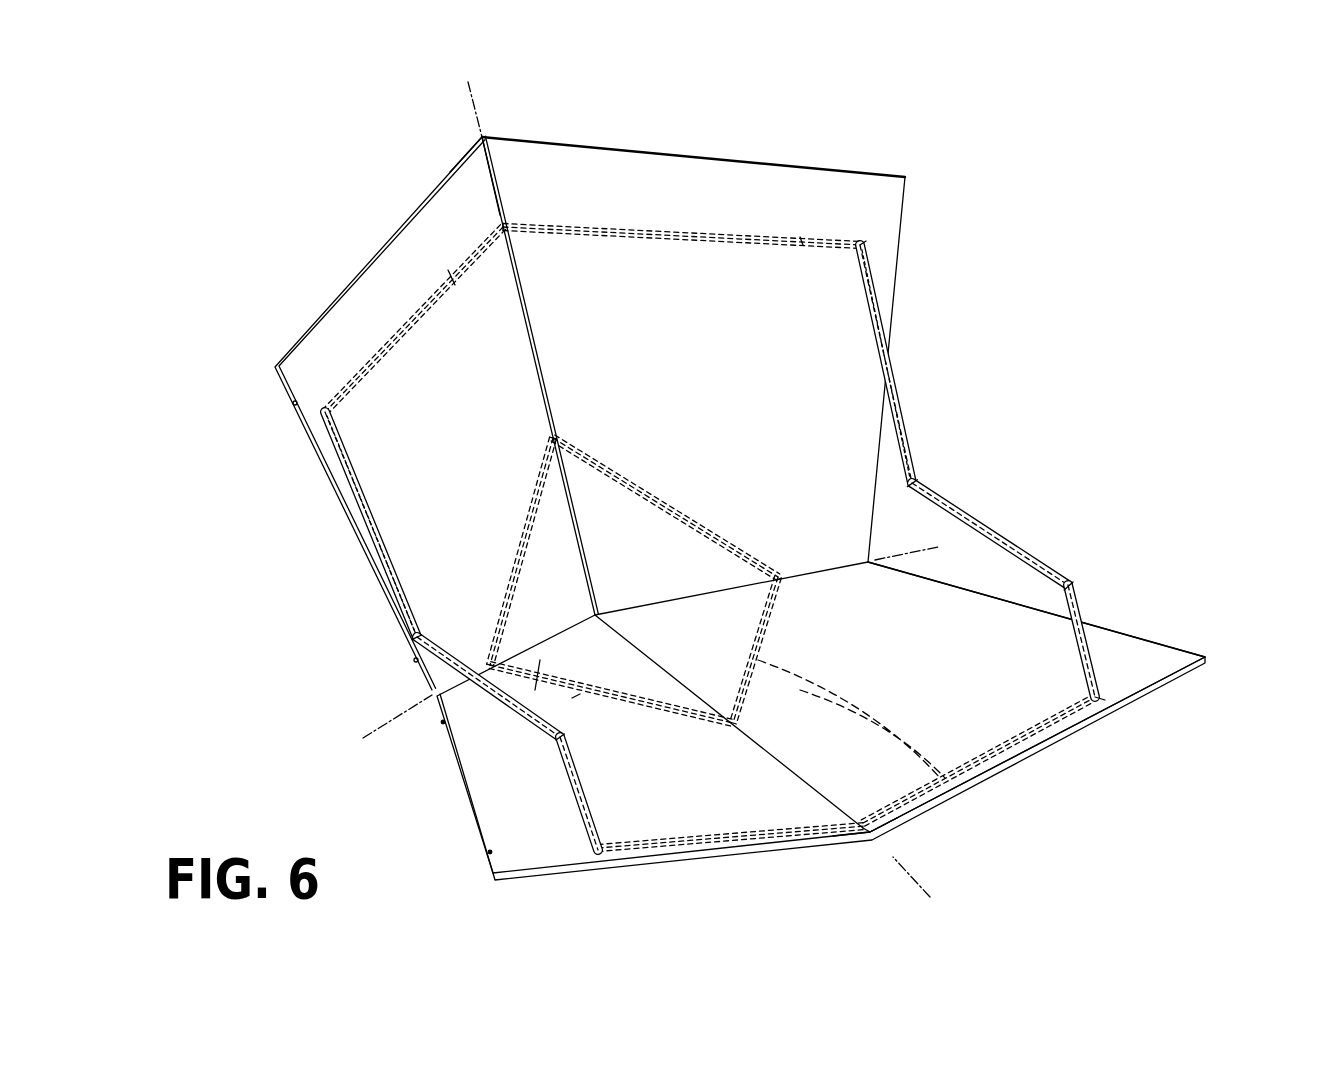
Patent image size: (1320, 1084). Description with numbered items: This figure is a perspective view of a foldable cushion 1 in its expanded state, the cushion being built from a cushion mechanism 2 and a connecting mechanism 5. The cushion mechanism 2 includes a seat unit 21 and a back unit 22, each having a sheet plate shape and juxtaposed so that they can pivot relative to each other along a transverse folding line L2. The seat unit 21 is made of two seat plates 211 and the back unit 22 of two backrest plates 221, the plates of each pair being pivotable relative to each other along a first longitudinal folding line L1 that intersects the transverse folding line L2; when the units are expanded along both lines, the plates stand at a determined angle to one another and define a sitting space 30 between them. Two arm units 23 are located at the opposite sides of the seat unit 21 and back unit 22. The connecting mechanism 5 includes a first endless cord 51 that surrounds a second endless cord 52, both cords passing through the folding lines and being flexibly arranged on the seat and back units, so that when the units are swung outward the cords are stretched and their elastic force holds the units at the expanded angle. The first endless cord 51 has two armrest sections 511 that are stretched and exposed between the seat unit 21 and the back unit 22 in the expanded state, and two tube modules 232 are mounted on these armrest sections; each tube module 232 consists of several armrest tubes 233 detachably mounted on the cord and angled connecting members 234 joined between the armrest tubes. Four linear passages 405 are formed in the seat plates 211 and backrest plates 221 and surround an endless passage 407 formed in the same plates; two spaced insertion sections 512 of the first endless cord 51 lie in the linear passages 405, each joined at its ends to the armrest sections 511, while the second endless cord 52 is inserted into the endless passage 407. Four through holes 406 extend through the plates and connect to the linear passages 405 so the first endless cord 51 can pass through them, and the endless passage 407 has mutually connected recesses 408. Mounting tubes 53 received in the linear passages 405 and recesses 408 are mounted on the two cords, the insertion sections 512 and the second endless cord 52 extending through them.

The foldable cushion 1 is at (729, 502).
The cushion mechanism 2 is at (367, 230).
The connecting mechanism 5 is at (622, 222).
The seat unit 21 is at (1086, 743).
The back unit 22 is at (676, 134).
The arm unit 23 is at (714, 573).
The sitting space 30 is at (951, 720).
The first endless cord 51 is at (870, 280).
The second endless cord 52 is at (735, 727).
The mounting tube 53 is at (953, 800).
The seat plate 211 is at (893, 823).
The backrest plate 221 is at (472, 203).
The tube module 232 is at (902, 387).
The armrest tube 233 is at (1088, 605).
The angled connecting member 234 is at (915, 483).
The linear passage 405 is at (448, 270).
The through hole 406 is at (863, 245).
The endless passage 407 is at (535, 690).
The recess 408 is at (520, 650).
The armrest section 511 is at (895, 325).
The insertion section 512 is at (357, 370).
The first longitudinal folding line L1 is at (707, 485).
The transverse folding line L2 is at (376, 731).